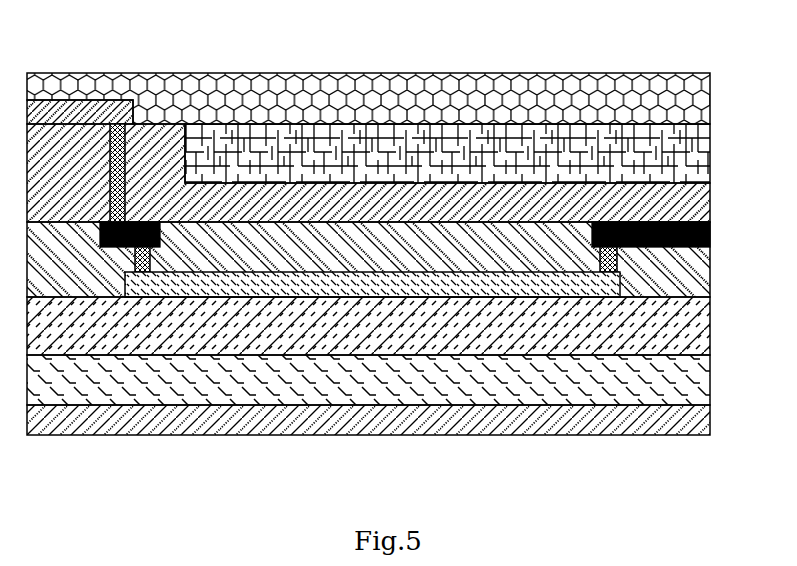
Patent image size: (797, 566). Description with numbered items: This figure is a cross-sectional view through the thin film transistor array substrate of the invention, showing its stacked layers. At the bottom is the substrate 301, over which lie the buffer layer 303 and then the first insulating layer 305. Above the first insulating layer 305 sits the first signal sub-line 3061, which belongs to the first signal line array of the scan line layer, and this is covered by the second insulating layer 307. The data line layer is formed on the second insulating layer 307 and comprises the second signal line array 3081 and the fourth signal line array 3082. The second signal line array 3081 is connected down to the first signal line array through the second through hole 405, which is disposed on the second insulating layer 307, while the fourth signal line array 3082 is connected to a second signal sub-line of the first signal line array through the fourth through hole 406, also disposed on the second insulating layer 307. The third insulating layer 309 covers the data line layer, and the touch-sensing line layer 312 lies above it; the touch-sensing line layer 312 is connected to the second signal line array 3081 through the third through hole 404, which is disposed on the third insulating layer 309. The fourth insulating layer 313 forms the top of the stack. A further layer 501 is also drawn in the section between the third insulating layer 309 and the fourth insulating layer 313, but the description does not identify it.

The substrate 301 is at (710, 425).
The buffer layer 303 is at (710, 375).
The first insulating layer 305 is at (710, 325).
The second insulating layer 307 is at (710, 285).
The first signal sub-line 3061 is at (443, 297).
The second signal line array 3081 is at (107, 247).
The fourth signal line array 3082 is at (710, 233).
The third insulating layer 309 is at (710, 205).
The touch-sensing line layer 312 is at (64, 100).
The fourth insulating layer 313 is at (710, 93).
The third through hole 404 is at (114, 123).
The second through hole 405 is at (137, 277).
The fourth through hole 406 is at (604, 273).
The color filter layer 501 is at (710, 151).